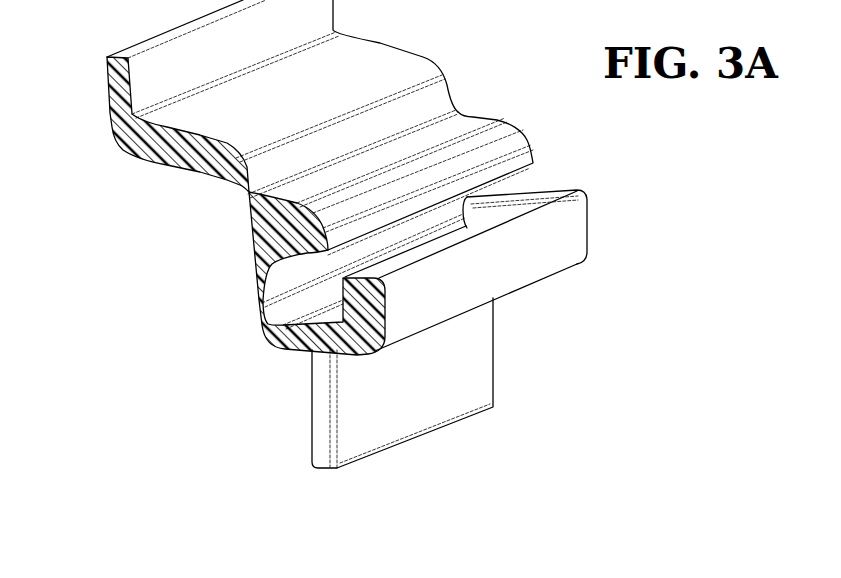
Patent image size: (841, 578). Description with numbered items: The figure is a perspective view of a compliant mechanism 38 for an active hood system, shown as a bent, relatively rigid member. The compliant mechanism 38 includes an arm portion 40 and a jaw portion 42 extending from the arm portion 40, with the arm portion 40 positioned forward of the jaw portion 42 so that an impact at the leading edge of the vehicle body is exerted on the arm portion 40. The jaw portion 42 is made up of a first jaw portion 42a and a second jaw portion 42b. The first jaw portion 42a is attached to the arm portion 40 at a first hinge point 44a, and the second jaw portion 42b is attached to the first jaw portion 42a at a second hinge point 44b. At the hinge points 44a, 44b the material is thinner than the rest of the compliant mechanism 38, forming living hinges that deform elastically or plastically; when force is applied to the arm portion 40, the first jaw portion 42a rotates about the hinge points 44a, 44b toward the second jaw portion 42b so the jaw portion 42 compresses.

The compliant mechanism 38 is at (117, 281).
The arm portion 40 is at (158, 153).
The jaw portion 42 is at (407, 290).
The first jaw portion 42a is at (255, 243).
The second jaw portion 42b is at (547, 253).
The first hinge point 44a is at (250, 197).
The second hinge point 44b is at (275, 321).